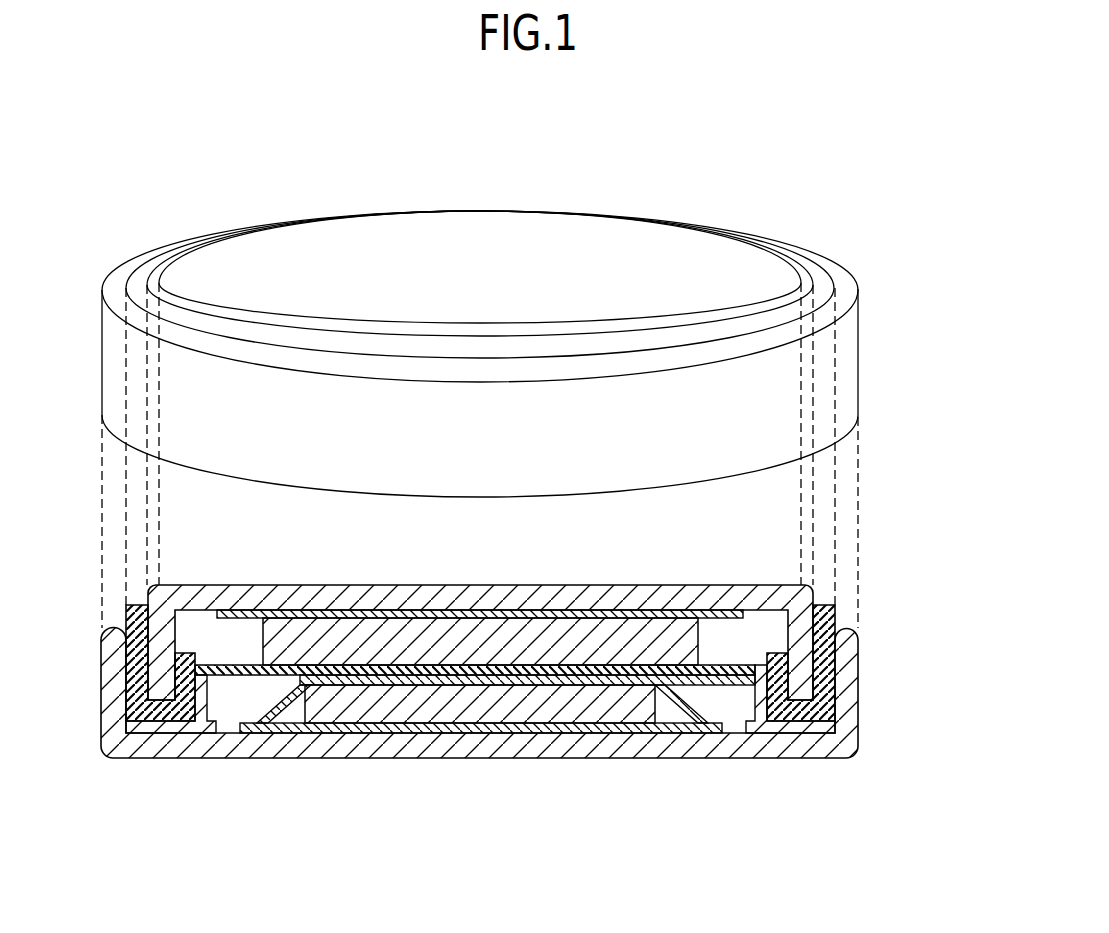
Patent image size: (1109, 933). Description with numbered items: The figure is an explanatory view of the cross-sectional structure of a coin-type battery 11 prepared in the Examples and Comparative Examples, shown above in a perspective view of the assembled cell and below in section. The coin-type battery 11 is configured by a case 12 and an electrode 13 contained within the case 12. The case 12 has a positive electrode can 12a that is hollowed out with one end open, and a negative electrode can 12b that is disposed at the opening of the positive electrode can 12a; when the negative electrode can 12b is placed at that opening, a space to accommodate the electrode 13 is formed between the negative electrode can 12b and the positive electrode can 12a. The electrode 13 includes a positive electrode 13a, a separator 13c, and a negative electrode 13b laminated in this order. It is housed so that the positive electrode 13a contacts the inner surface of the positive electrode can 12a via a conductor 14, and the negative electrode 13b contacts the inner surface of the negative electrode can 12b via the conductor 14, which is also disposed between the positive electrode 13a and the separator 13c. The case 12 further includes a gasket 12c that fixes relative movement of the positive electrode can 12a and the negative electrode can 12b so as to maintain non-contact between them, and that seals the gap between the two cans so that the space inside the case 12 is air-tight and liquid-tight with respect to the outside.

The coin-type battery 11 is at (100, 162).
The case 12 is at (536, 498).
The positive electrode can 12a is at (848, 362).
The negative electrode can 12b is at (637, 233).
The gasket 12c is at (138, 280).
The electrode 13 is at (475, 753).
The positive electrode 13a is at (565, 838).
The negative electrode 13b is at (540, 640).
The separator 13c is at (480, 675).
The conductor 14 is at (238, 615).